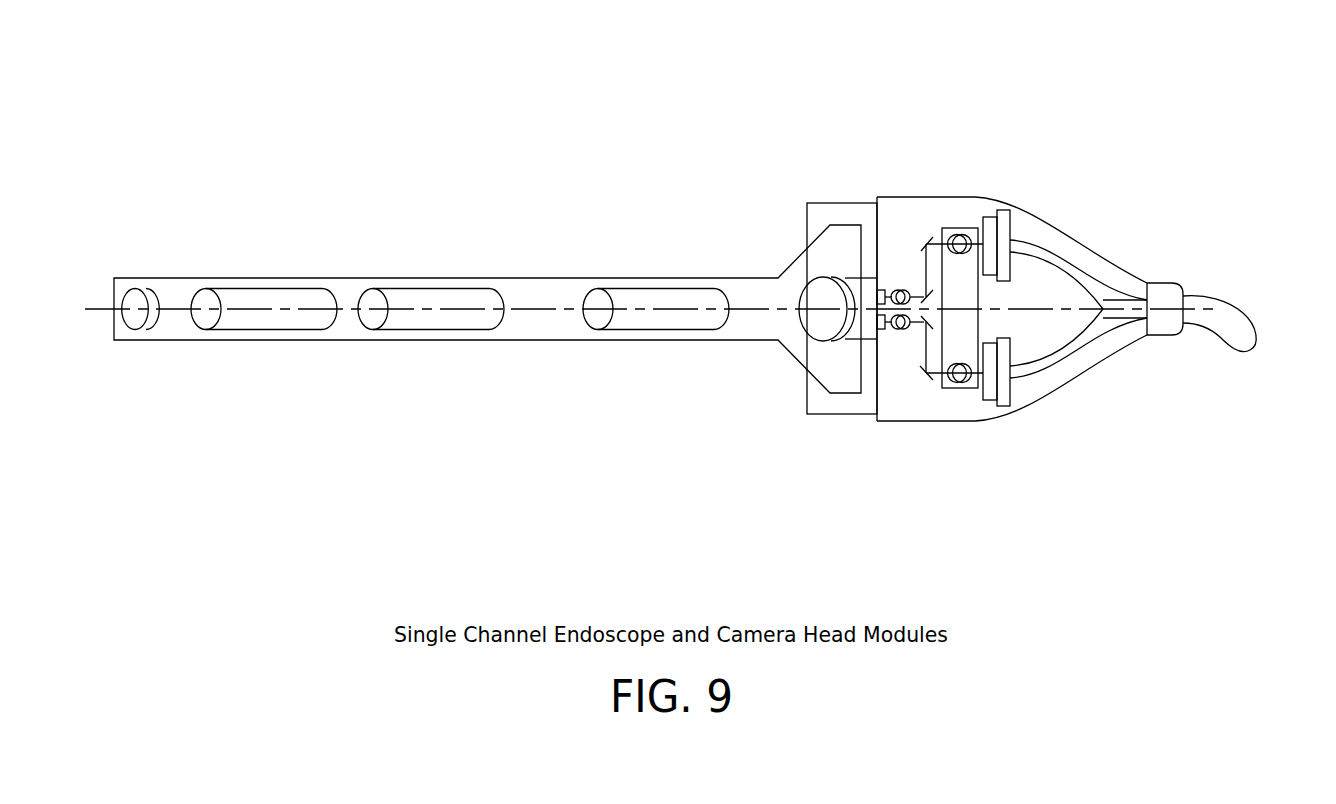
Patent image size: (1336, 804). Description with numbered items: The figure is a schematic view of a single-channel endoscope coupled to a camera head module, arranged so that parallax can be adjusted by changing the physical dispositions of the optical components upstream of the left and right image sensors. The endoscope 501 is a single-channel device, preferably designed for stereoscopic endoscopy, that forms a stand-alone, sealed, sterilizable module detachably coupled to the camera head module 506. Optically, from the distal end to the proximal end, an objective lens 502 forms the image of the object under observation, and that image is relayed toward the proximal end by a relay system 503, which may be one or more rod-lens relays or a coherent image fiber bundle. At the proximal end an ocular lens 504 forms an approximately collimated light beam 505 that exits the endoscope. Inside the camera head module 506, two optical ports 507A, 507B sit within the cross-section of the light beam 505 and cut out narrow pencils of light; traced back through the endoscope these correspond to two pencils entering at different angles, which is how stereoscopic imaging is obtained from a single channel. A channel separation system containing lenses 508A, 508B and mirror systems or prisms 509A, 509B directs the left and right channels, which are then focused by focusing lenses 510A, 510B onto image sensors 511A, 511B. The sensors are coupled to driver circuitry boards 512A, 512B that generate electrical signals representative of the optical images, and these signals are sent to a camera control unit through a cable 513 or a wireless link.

The endoscope 501 is at (542, 212).
The objective lens 502 is at (146, 290).
The relay system 503 is at (388, 350).
The ocular lens 504 is at (812, 278).
The light beam 505 is at (858, 338).
The camera head module 506 is at (1090, 212).
The optical port 507A is at (885, 289).
The optical port 507B is at (885, 330).
The lens 508A is at (900, 290).
The lens 508B is at (902, 329).
The mirror system 509A is at (923, 243).
The mirror system 509B is at (920, 363).
The focusing lens 510A is at (958, 240).
The focusing lens 510B is at (960, 378).
The image sensor 511A is at (988, 232).
The image sensor 511B is at (990, 397).
The driver circuitry board 512A is at (1016, 221).
The driver circuitry board 512B is at (1015, 390).
The cable 513 is at (1217, 298).